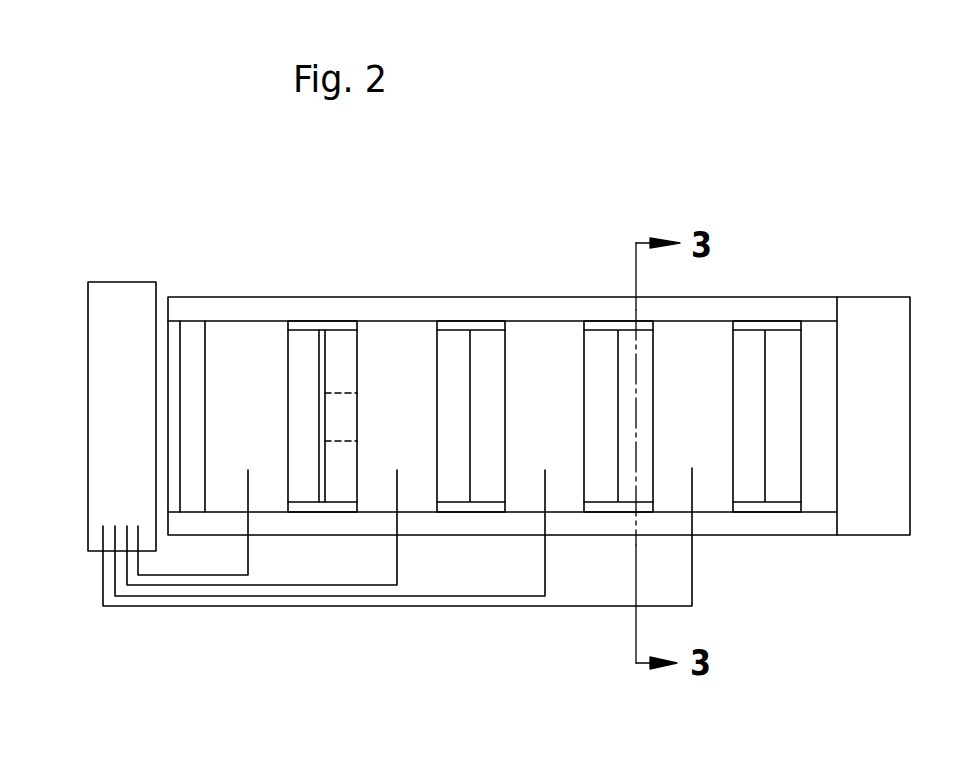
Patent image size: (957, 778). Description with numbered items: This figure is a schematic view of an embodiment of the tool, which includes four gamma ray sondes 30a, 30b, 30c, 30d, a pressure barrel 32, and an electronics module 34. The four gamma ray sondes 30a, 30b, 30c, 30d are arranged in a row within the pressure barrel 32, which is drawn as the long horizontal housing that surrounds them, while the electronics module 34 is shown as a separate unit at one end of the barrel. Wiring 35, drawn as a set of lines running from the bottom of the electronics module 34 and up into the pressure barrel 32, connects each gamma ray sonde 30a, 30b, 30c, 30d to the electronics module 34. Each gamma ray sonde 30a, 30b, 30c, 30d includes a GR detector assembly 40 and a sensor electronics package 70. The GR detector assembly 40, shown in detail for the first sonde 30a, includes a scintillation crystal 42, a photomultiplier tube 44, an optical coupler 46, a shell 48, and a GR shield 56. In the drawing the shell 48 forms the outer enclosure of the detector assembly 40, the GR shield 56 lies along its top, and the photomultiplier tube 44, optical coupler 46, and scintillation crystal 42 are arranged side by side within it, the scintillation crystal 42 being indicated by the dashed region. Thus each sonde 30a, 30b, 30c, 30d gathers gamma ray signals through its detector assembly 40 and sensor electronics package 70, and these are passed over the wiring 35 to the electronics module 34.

The gamma ray sonde 30a is at (403, 459).
The gamma ray sonde 30b is at (463, 558).
The gamma ray sonde 30c is at (605, 553).
The gamma ray sonde 30d is at (767, 551).
The pressure barrel 32 is at (418, 523).
The electronics module 34 is at (90, 553).
The wiring 35 is at (150, 623).
The GR detector assembly 40 is at (328, 310).
The scintillation crystal 42 is at (343, 418).
The photomultiplier tube 44 is at (302, 353).
The optical coupler 46 is at (322, 500).
The shell 48 is at (340, 483).
The GR shield 56 is at (347, 324).
The sensor electronics package 70 is at (236, 360).